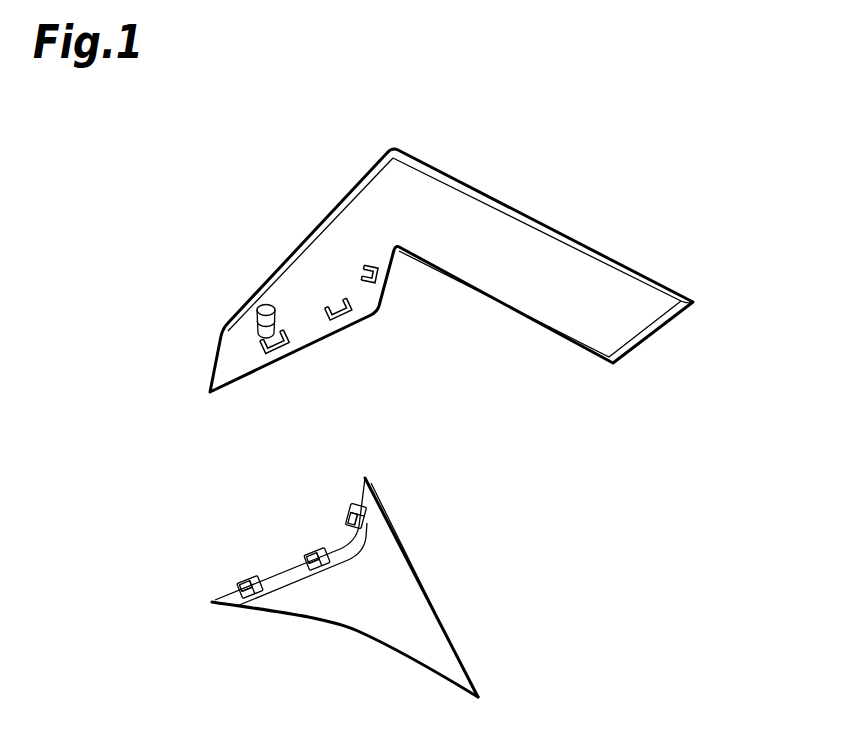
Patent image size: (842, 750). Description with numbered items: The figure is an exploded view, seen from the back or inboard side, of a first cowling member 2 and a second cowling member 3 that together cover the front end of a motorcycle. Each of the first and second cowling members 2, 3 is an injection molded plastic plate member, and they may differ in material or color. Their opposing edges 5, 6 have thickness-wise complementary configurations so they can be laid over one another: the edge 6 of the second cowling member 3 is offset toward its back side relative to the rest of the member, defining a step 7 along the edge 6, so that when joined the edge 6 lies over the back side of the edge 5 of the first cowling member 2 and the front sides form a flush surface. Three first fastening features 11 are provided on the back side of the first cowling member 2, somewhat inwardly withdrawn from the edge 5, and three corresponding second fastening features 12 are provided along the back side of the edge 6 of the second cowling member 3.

The first cowling member 2 is at (483, 194).
The second cowling member 3 is at (442, 557).
The edge of the first cowling member 5 is at (245, 363).
The edge of the second cowling member 6 is at (232, 597).
The step 7 is at (285, 585).
The first fastening features 11 is at (290, 312).
The second fastening features 12 is at (330, 512).